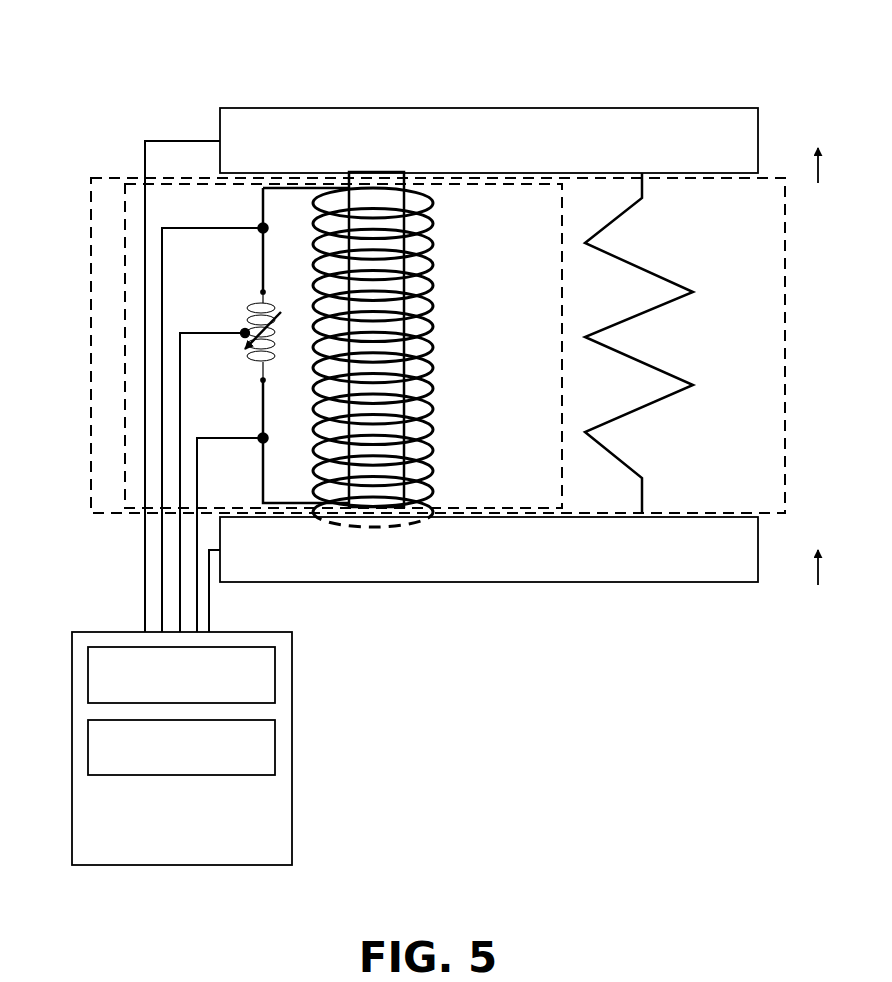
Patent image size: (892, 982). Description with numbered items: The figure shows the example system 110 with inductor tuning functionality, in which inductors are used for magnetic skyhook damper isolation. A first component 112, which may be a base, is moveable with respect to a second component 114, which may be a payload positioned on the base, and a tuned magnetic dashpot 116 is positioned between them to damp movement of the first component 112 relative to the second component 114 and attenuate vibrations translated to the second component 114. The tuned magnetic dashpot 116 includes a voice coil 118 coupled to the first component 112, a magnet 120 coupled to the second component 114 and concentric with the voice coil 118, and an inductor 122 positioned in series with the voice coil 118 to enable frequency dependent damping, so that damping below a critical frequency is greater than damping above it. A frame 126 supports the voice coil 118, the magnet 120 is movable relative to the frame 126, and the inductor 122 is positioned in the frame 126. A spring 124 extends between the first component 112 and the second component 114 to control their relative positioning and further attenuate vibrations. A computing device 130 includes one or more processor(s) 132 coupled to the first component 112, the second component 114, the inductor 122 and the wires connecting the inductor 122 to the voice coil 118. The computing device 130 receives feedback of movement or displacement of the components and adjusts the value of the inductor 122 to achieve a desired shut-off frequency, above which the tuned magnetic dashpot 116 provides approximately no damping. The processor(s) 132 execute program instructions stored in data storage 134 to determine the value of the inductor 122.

The system 110 is at (191, 50).
The first component 112 is at (489, 549).
The second component 114 is at (489, 140).
The tuned magnetic dashpot 116 is at (124, 224).
The voice coil 118 is at (440, 248).
The magnet 120 is at (392, 320).
The inductor 122 is at (248, 294).
The spring 124 is at (680, 263).
The frame 126 is at (91, 293).
The computing device 130 is at (182, 748).
The processor(s) 132 is at (181, 675).
The data storage 134 is at (181, 747).